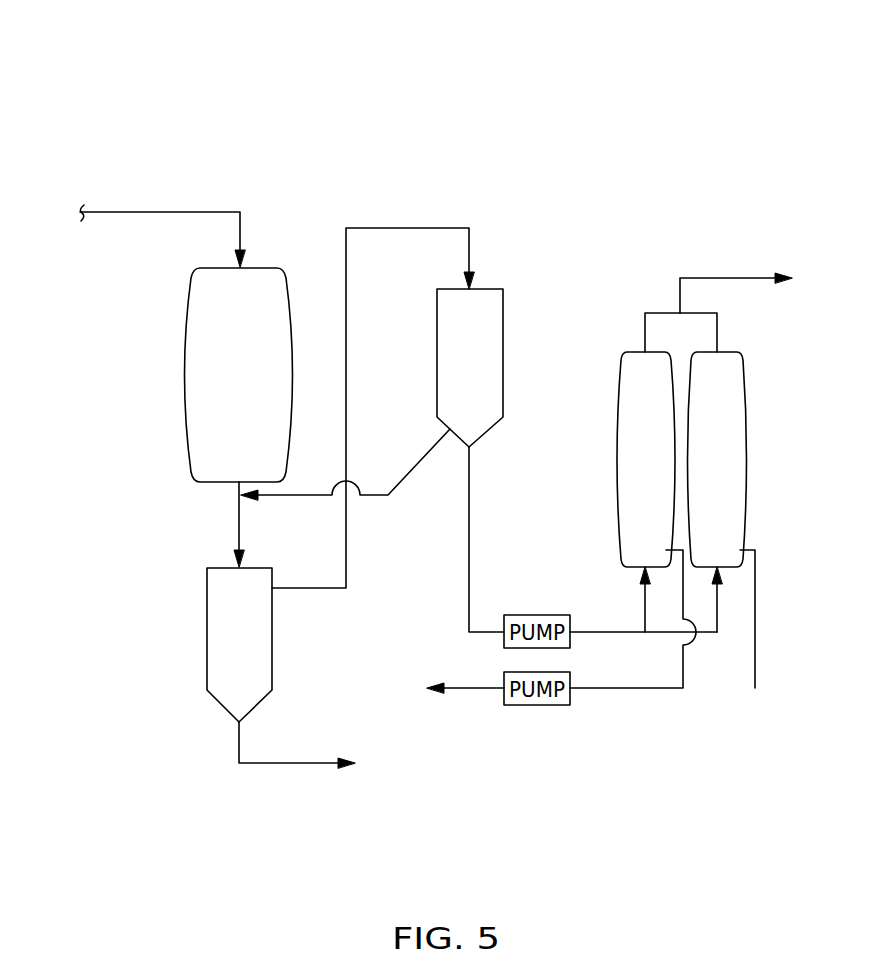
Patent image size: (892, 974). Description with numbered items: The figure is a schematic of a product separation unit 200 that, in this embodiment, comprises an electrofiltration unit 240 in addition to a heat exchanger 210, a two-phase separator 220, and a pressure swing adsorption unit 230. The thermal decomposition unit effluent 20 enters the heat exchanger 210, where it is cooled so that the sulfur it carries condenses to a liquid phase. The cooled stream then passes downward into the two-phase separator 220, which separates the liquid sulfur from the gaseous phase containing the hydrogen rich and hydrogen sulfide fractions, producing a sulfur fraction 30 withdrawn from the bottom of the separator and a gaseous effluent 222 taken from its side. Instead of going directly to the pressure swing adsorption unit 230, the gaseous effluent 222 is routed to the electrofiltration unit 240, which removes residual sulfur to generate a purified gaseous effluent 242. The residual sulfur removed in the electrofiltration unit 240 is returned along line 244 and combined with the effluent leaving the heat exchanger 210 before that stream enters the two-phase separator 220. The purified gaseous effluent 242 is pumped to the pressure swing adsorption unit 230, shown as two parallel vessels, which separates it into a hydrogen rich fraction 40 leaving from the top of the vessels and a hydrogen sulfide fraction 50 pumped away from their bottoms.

The product separation unit 200 is at (440, 88).
The thermal decomposition unit effluent 20 is at (160, 212).
The heat exchanger 210 is at (219, 397).
The two-phase separator 220 is at (224, 661).
The sulfur fraction 30 is at (287, 764).
The gaseous effluent 222 is at (407, 228).
The electrofiltration unit 240 is at (453, 381).
The liquid return line 244 is at (412, 470).
The purified gaseous effluent 242 is at (471, 540).
The pressure swing adsorption unit 230 is at (629, 471).
The hydrogen rich fraction 40 is at (728, 278).
The hydrogen sulfide fraction 50 is at (470, 690).